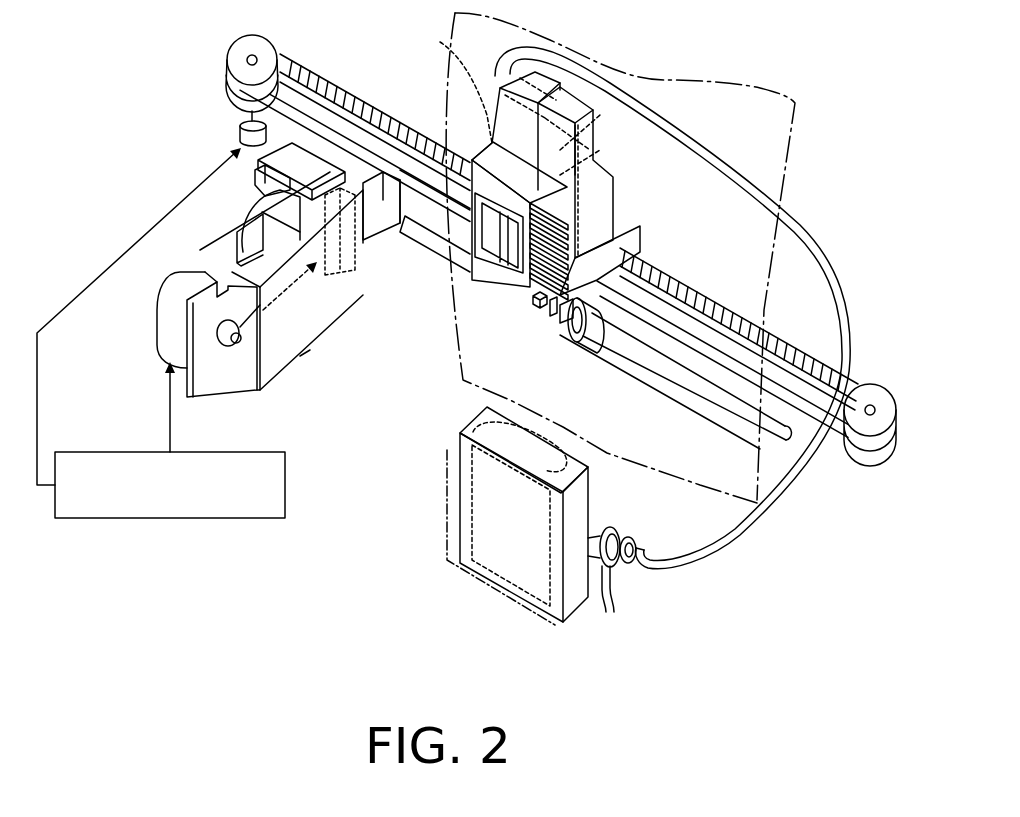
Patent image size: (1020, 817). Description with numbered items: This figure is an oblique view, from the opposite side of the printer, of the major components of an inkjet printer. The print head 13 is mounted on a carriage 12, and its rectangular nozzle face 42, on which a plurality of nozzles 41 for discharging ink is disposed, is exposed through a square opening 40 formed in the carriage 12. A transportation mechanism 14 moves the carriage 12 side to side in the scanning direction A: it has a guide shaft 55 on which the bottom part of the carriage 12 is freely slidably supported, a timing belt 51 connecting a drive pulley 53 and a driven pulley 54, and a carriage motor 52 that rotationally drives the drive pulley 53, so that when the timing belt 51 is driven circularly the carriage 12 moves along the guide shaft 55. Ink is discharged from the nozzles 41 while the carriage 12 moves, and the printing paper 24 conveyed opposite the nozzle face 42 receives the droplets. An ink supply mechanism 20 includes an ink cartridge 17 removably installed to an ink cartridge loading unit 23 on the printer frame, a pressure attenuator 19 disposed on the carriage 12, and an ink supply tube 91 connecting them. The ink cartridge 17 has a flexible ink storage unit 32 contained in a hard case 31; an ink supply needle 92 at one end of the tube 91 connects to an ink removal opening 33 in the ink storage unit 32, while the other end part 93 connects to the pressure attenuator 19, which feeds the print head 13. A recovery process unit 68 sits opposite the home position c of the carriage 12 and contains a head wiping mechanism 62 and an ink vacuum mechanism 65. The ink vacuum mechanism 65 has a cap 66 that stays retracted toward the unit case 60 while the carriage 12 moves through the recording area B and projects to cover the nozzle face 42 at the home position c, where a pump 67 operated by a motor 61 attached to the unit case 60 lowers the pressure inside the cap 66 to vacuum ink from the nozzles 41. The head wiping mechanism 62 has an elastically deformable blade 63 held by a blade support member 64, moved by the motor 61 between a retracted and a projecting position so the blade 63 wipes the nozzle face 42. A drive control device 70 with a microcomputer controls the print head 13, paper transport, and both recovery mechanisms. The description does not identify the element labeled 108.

The carriage 12 is at (640, 230).
The print head 13 is at (482, 221).
The transportation mechanism 14 is at (521, 277).
The ink cartridge 17 is at (540, 527).
The pressure attenuator 19 is at (537, 196).
The ink supply mechanism 20 is at (503, 587).
The ink cartridge loading unit 23 is at (636, 538).
The printing paper 24 is at (783, 170).
The hard case 31 is at (600, 473).
The ink storage unit 32 is at (590, 514).
The ink removal opening 33 is at (637, 562).
The opening 40 is at (587, 222).
The nozzles 41 is at (485, 250).
The nozzle face 42 is at (515, 258).
The timing belt 51 is at (703, 293).
The carriage motor 52 is at (240, 136).
The drive pulley 53 is at (232, 62).
The driven pulley 54 is at (873, 463).
The guide shaft 55 is at (618, 358).
The unit case 60 is at (273, 367).
The motor 61 is at (170, 307).
The head wiping mechanism 62 is at (400, 337).
The blade 63 is at (403, 340).
The blade support member 64 is at (361, 275).
The ink vacuum mechanism 65 is at (238, 232).
The cap 66 is at (320, 167).
The pump 67 is at (263, 215).
The recovery process unit 68 is at (307, 357).
The drive control device 70 is at (285, 482).
The ink supply tube 91 is at (783, 500).
The ink supply needle 92 is at (600, 575).
The other end part 93 is at (613, 182).
The holder 108 is at (590, 150).
The scanning direction A is at (487, 322).
The recording area B is at (623, 380).
The home position c is at (338, 164).